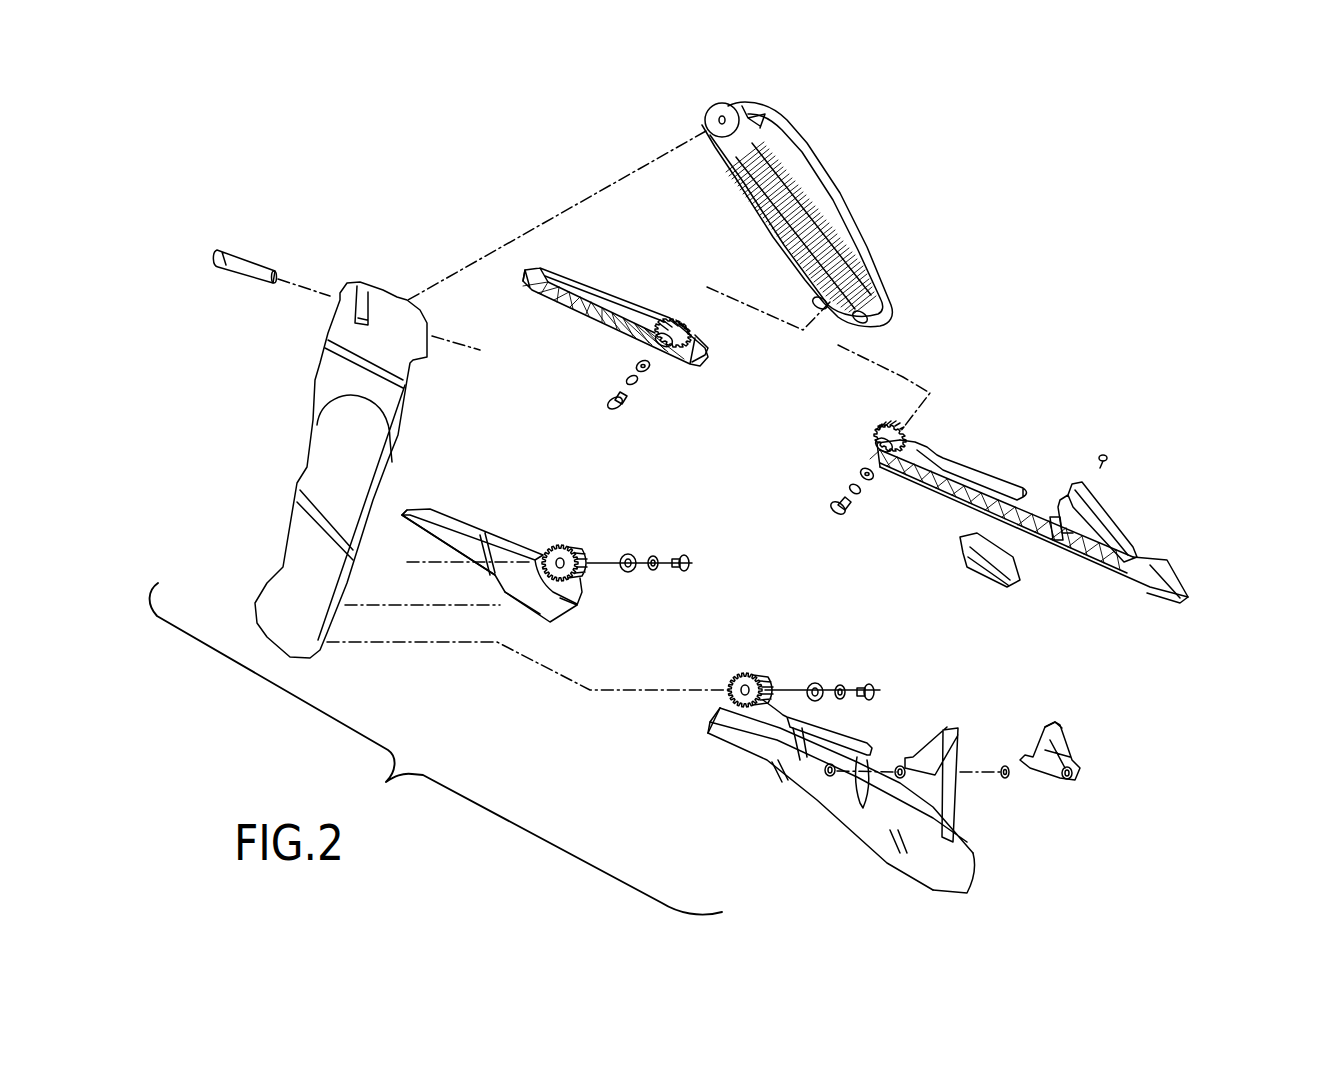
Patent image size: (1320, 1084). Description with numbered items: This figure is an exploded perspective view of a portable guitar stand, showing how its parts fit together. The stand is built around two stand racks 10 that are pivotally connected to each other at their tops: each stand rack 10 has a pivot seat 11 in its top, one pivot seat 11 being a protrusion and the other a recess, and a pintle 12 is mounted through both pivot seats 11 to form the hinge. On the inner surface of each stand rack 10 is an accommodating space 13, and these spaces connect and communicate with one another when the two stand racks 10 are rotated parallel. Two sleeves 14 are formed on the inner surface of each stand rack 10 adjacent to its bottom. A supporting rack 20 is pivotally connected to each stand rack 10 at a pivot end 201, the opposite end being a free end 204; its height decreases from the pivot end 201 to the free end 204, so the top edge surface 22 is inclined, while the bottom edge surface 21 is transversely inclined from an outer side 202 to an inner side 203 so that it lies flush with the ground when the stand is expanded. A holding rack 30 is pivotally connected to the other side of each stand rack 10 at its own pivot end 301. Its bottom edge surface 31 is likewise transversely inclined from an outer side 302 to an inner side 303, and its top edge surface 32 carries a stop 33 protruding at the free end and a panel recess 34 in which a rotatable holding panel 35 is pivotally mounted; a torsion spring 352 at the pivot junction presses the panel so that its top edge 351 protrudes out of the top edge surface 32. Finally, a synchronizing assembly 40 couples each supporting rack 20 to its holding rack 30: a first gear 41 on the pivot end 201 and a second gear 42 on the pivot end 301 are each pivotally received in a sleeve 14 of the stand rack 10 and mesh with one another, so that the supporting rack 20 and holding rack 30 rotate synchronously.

The stand rack 10 is at (310, 385).
The pivot seat 11 is at (372, 298).
The pintle 12 is at (216, 248).
The accommodating space 13 is at (830, 197).
The sleeve 14 is at (828, 305).
The supporting rack 20 is at (557, 265).
The bottom edge surface 21 is at (495, 622).
The top edge surface 22 is at (592, 292).
The pivot end 201 is at (704, 360).
The outer side 202 is at (525, 600).
The inner side 203 is at (592, 320).
The free end 204 is at (523, 286).
The holding rack 30 is at (1195, 571).
The bottom edge surface 31 is at (817, 813).
The top edge surface 32 is at (993, 480).
The stop 33 is at (1090, 495).
The panel recess 34 is at (1033, 503).
The rotatable holding panel 35 is at (960, 560).
The pivot end 301 is at (708, 722).
The outer side 302 is at (900, 853).
The inner side 303 is at (1093, 570).
The top edge 351 is at (1052, 727).
The torsion spring 352 is at (1023, 556).
The synchronizing assembly 40 is at (726, 600).
The first gear 41 is at (660, 315).
The second gear 42 is at (885, 423).